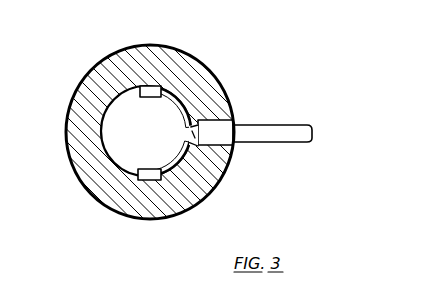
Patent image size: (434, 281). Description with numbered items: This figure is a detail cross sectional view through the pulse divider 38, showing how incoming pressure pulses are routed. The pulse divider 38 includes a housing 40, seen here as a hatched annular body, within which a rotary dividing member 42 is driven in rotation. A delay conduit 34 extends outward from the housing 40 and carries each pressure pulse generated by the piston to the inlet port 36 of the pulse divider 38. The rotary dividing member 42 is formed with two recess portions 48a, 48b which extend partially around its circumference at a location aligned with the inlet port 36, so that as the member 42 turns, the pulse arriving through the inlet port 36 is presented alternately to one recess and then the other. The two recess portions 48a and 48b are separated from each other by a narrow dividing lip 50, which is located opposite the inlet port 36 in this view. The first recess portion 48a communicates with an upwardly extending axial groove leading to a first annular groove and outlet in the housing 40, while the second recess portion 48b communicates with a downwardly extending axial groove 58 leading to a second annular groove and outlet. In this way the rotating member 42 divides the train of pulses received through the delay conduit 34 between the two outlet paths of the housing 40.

The delay conduit 34 is at (283, 137).
The inlet port 36 is at (212, 132).
The pulse divider 38 is at (132, 220).
The housing 40 is at (85, 176).
The rotary dividing member 42 is at (167, 110).
The recess portion 48a is at (183, 107).
The recess portion 48b is at (208, 179).
The dividing lip 50 is at (224, 170).
The downwardly extending axial groove 58 is at (152, 179).